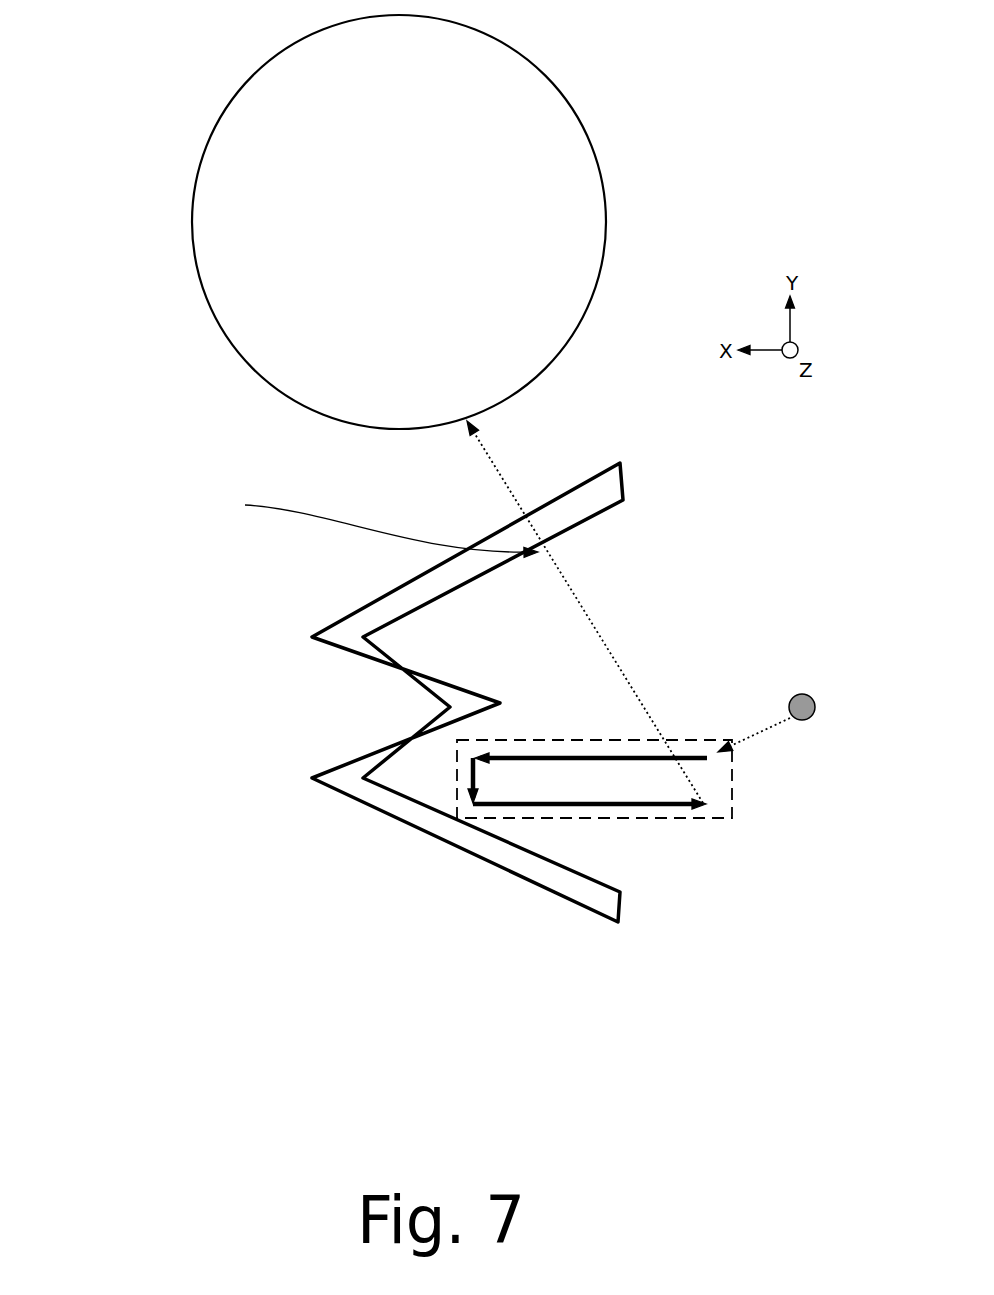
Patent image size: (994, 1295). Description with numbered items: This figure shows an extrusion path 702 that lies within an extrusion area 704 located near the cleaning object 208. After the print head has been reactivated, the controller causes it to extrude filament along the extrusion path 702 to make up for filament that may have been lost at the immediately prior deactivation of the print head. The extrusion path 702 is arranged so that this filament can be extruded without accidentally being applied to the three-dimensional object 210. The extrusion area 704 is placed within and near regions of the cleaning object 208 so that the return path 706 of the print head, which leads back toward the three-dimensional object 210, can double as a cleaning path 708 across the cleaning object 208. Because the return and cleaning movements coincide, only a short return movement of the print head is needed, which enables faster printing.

The 3D object 210 is at (613, 117).
The cleaning object 208 is at (628, 928).
The extrusion path 702 is at (617, 813).
The extrusion area 704 is at (735, 780).
The return path 706 is at (586, 603).
The cleaning path 708 is at (314, 577).